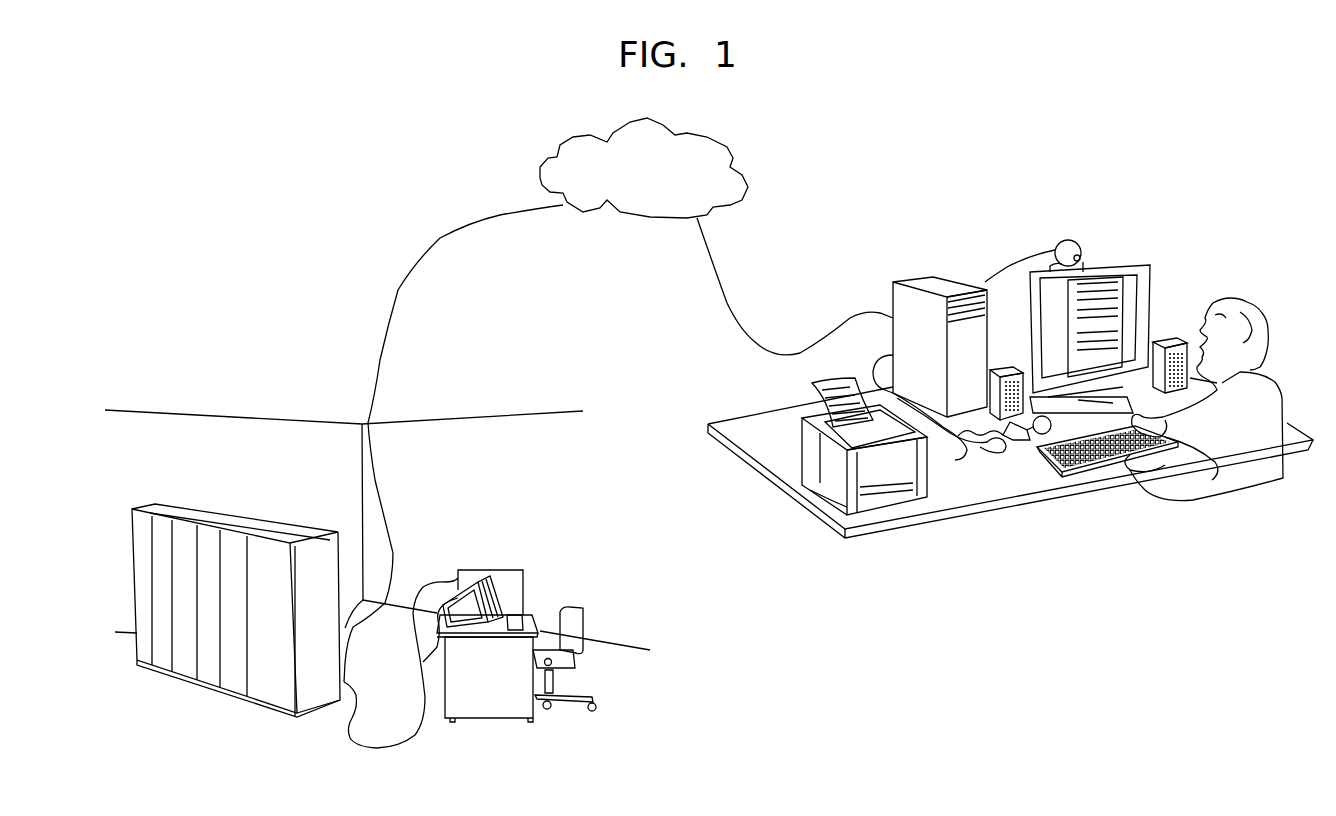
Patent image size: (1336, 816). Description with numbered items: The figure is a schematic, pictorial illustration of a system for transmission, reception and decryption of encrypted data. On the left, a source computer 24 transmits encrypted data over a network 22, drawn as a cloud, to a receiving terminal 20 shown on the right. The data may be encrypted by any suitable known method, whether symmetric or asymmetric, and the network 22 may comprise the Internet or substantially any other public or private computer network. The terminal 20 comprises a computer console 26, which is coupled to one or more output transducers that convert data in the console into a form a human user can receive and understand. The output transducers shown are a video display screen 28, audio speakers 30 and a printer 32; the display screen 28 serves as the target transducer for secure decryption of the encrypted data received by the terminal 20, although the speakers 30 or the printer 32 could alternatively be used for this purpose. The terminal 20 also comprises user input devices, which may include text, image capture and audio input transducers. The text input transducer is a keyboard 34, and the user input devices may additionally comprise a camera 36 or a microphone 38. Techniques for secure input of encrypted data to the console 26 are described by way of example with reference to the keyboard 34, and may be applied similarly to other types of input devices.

The receiving terminal 20 is at (1112, 213).
The network 22 is at (553, 150).
The source computer 24 is at (262, 523).
The computer console 26 is at (930, 282).
The video display screen 28 is at (1133, 265).
The audio speakers 30 is at (1005, 370).
The printer 32 is at (893, 467).
The keyboard 34 is at (1080, 463).
The camera 36 is at (1060, 242).
The microphone 38 is at (1040, 434).